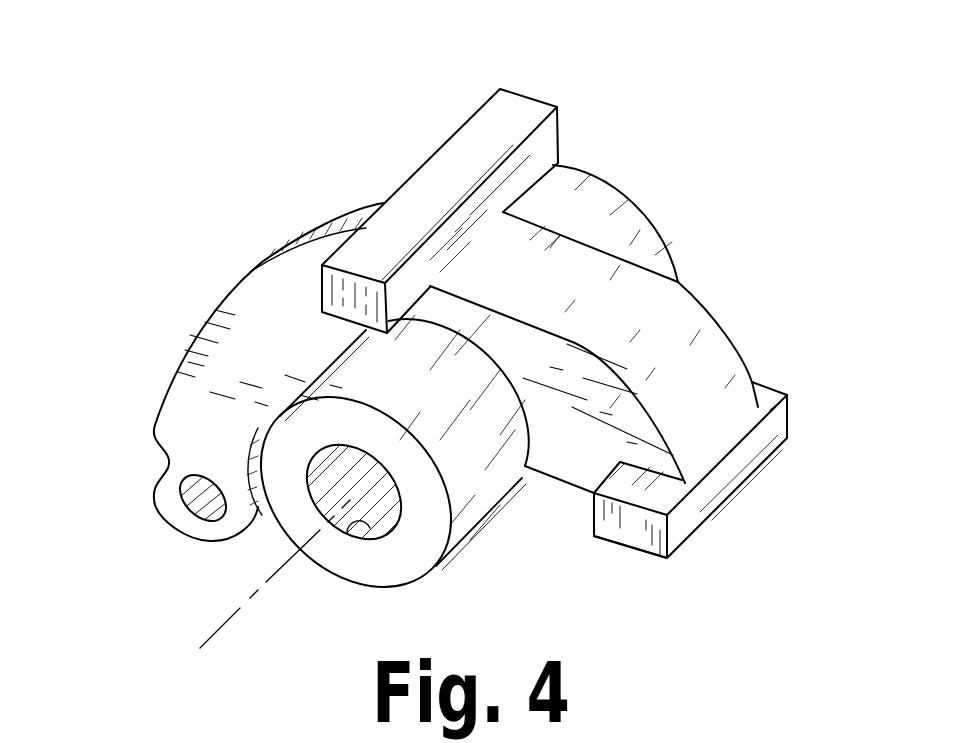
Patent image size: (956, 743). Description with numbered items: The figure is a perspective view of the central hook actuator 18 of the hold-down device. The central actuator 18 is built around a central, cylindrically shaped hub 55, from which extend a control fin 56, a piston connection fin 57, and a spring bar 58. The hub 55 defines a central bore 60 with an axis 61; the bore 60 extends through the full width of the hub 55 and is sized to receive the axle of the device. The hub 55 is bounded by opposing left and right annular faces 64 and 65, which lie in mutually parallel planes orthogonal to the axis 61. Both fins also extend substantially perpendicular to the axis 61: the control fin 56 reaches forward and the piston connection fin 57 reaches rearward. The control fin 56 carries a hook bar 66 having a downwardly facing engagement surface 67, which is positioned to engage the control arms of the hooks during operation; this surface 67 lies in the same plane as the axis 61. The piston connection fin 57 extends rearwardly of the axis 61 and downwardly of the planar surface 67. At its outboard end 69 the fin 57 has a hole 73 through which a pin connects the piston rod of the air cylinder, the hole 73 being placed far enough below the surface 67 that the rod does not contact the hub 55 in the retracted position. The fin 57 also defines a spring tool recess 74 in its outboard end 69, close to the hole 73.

The central hook actuator 18 is at (690, 92).
The hub 55 is at (493, 480).
The control fin 56 is at (706, 314).
The piston connection fin 57 is at (177, 393).
The spring bar 58 is at (447, 163).
The central bore 60 is at (340, 523).
The axis 61 is at (215, 633).
The left annular face 64 is at (417, 542).
The right annular face 65 is at (598, 172).
The hook bar 66 is at (697, 513).
The engagement surface 67 is at (618, 545).
The outboard end 69 is at (232, 522).
The hole 73 is at (190, 515).
The spring tool recess 74 is at (166, 460).